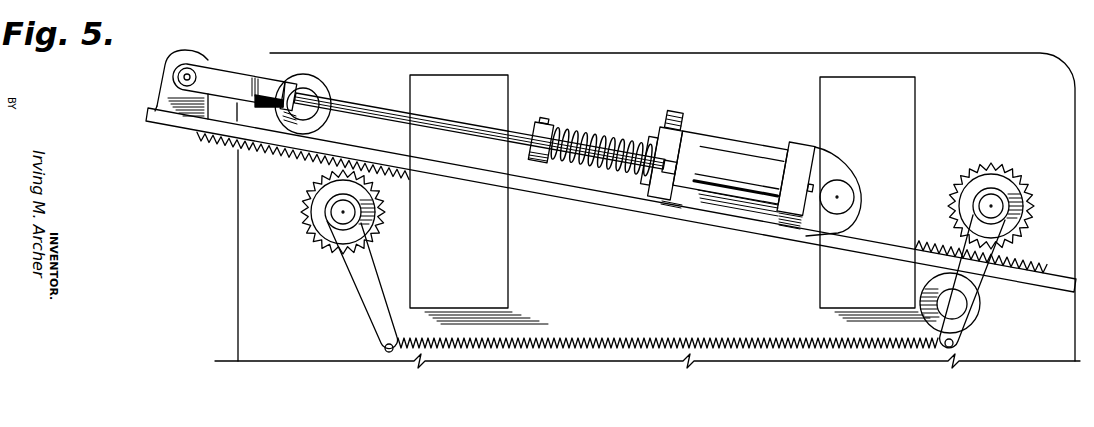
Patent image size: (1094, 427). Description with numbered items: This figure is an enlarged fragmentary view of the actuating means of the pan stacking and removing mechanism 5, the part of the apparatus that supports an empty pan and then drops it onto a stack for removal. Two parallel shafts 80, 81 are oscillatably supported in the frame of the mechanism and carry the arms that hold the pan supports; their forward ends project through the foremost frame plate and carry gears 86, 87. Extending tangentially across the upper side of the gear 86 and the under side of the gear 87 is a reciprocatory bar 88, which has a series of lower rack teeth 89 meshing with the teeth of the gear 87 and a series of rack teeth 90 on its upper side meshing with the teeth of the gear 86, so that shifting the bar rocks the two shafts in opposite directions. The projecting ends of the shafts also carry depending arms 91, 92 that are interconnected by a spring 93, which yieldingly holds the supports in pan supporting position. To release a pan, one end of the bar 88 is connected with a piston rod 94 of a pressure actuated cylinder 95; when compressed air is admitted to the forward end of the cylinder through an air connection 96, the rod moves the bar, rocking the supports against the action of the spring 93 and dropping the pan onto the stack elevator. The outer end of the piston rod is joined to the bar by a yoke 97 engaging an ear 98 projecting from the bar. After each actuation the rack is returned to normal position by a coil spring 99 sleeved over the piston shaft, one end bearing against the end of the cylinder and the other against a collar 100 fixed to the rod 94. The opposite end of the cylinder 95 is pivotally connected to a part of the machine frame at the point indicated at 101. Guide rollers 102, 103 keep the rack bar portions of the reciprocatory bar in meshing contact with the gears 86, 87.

The pan stacking and removing mechanism 5 is at (238, 186).
The shaft 80 is at (996, 207).
The shaft 81 is at (330, 218).
The gear 86 is at (1009, 167).
The gear 87 is at (305, 212).
The bar 88 is at (604, 198).
The lower rack teeth 89 is at (292, 160).
The rack teeth 90 is at (1020, 258).
The depending arm 91 is at (969, 287).
The depending arm 92 is at (372, 300).
The spring 93 is at (687, 339).
The piston rod 94 is at (456, 121).
The pressure actuated cylinder 95 is at (710, 134).
The air connection 96 is at (673, 111).
The yoke 97 is at (248, 76).
The ear 98 is at (200, 56).
The coil spring 99 is at (588, 133).
The collar 100 is at (545, 121).
The pivotal connection 101 is at (845, 186).
The guide roller 102 is at (979, 312).
The guide roller 103 is at (322, 88).